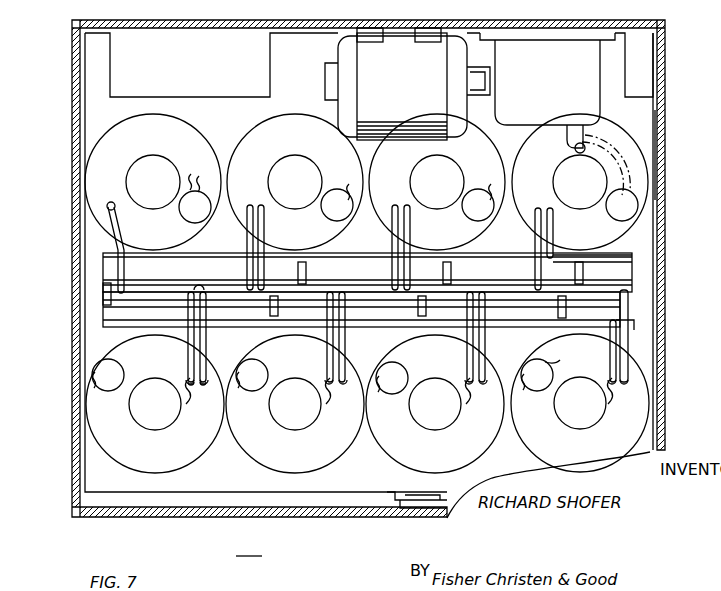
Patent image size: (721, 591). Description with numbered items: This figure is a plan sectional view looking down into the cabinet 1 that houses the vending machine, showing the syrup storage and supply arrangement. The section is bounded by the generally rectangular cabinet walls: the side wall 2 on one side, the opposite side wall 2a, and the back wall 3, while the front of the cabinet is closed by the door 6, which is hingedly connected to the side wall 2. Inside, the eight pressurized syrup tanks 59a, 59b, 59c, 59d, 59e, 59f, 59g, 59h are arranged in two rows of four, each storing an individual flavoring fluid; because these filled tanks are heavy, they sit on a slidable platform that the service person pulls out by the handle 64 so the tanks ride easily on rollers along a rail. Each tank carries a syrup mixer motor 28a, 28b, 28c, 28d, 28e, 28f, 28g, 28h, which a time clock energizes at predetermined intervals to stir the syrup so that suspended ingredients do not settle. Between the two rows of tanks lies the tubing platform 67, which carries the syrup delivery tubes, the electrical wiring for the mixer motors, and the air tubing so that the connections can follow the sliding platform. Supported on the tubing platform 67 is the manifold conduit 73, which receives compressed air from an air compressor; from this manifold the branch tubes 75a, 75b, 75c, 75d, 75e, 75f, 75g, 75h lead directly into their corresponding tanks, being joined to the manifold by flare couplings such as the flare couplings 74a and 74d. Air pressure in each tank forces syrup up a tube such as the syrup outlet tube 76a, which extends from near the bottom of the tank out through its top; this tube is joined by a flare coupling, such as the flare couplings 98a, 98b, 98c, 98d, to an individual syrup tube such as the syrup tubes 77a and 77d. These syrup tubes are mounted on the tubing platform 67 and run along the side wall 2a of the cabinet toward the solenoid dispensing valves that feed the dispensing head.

The cabinet 1 is at (298, 529).
The side wall 2 is at (72, 190).
The side wall 2a is at (660, 142).
The back wall 3 is at (365, 22).
The door 6 is at (640, 2).
The handle 64 is at (432, 515).
The tubing platform 67 is at (103, 275).
The manifold conduit 73 is at (105, 312).
The flare coupling 74a is at (632, 292).
The flare coupling 74d is at (207, 290).
The branch tube 75a is at (622, 355).
The branch tube 75b is at (478, 345).
The branch tube 75c is at (338, 345).
The branch tube 75d is at (205, 345).
The branch tube 75e is at (125, 274).
The branch tube 75f is at (260, 244).
The branch tube 75g is at (400, 244).
The branch tube 75h is at (540, 248).
The syrup outlet tube 76a is at (573, 366).
The syrup tube 77a is at (628, 345).
The syrup tube 77d is at (190, 350).
The syrup mixer motor 28a is at (550, 372).
The syrup mixer motor 28b is at (392, 395).
The syrup mixer motor 28c is at (253, 392).
The syrup mixer motor 28d is at (112, 392).
The syrup mixer motor 28e is at (195, 198).
The syrup mixer motor 28f is at (340, 190).
The syrup mixer motor 28g is at (484, 185).
The syrup mixer motor 28h is at (645, 205).
The syrup tank 59a is at (580, 403).
The syrup tank 59b is at (435, 404).
The syrup tank 59c is at (295, 404).
The syrup tank 59d is at (155, 404).
The syrup tank 59e is at (153, 182).
The syrup tank 59f is at (295, 182).
The syrup tank 59g is at (437, 182).
The syrup tank 59h is at (580, 182).
The flare coupling 98a is at (620, 400).
The flare coupling 98b is at (478, 402).
The flare coupling 98c is at (336, 402).
The flare coupling 98d is at (198, 400).